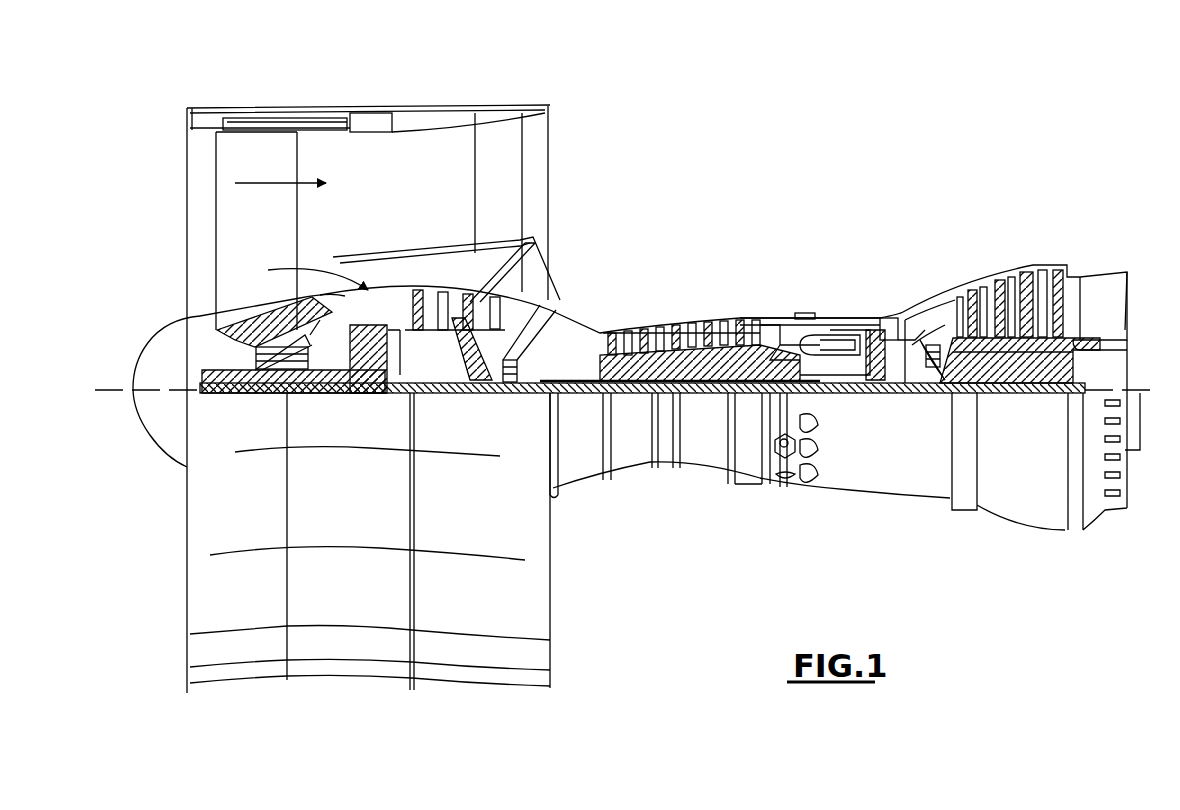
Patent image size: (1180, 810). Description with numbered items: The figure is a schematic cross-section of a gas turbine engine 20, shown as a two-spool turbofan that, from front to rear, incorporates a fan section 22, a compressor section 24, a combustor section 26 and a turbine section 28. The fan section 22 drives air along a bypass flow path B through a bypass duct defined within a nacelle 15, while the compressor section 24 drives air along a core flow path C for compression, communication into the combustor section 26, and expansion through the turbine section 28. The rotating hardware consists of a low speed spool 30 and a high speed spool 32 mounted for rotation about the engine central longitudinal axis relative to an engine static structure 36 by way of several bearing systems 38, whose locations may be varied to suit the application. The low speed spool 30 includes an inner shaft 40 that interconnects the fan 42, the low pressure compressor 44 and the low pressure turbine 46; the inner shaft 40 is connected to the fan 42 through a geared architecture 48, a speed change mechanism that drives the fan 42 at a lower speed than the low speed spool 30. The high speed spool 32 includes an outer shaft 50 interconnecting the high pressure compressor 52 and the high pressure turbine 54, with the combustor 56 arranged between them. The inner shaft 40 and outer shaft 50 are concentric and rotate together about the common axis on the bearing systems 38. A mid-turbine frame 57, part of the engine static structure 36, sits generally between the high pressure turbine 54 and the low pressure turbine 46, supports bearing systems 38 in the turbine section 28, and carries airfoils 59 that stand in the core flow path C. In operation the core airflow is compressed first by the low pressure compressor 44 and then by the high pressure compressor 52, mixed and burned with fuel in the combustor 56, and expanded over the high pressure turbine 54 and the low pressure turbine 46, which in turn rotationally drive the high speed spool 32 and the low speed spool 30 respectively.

The nacelle 15 is at (370, 112).
The gas turbine engine 20 is at (832, 160).
The fan section 22 is at (298, 92).
The compressor section 24 is at (600, 296).
The combustor section 26 is at (822, 288).
The turbine section 28 is at (967, 253).
The low speed spool 30 is at (706, 402).
The high speed spool 32 is at (745, 360).
The engine static structure 36 is at (747, 486).
The bearing systems 38 is at (505, 372).
The inner shaft 40 is at (566, 400).
The fan 42 is at (270, 237).
The low pressure compressor 44 is at (472, 302).
The low pressure turbine 46 is at (1012, 285).
The geared architecture 48 is at (376, 372).
The outer shaft 50 is at (836, 394).
The high pressure compressor 52 is at (678, 347).
The high pressure turbine 54 is at (887, 325).
The combustor 56 is at (822, 337).
The mid-turbine frame 57 is at (934, 298).
The airfoils 59 is at (945, 345).
The bypass flow path B is at (270, 183).
The core flow path C is at (309, 275).